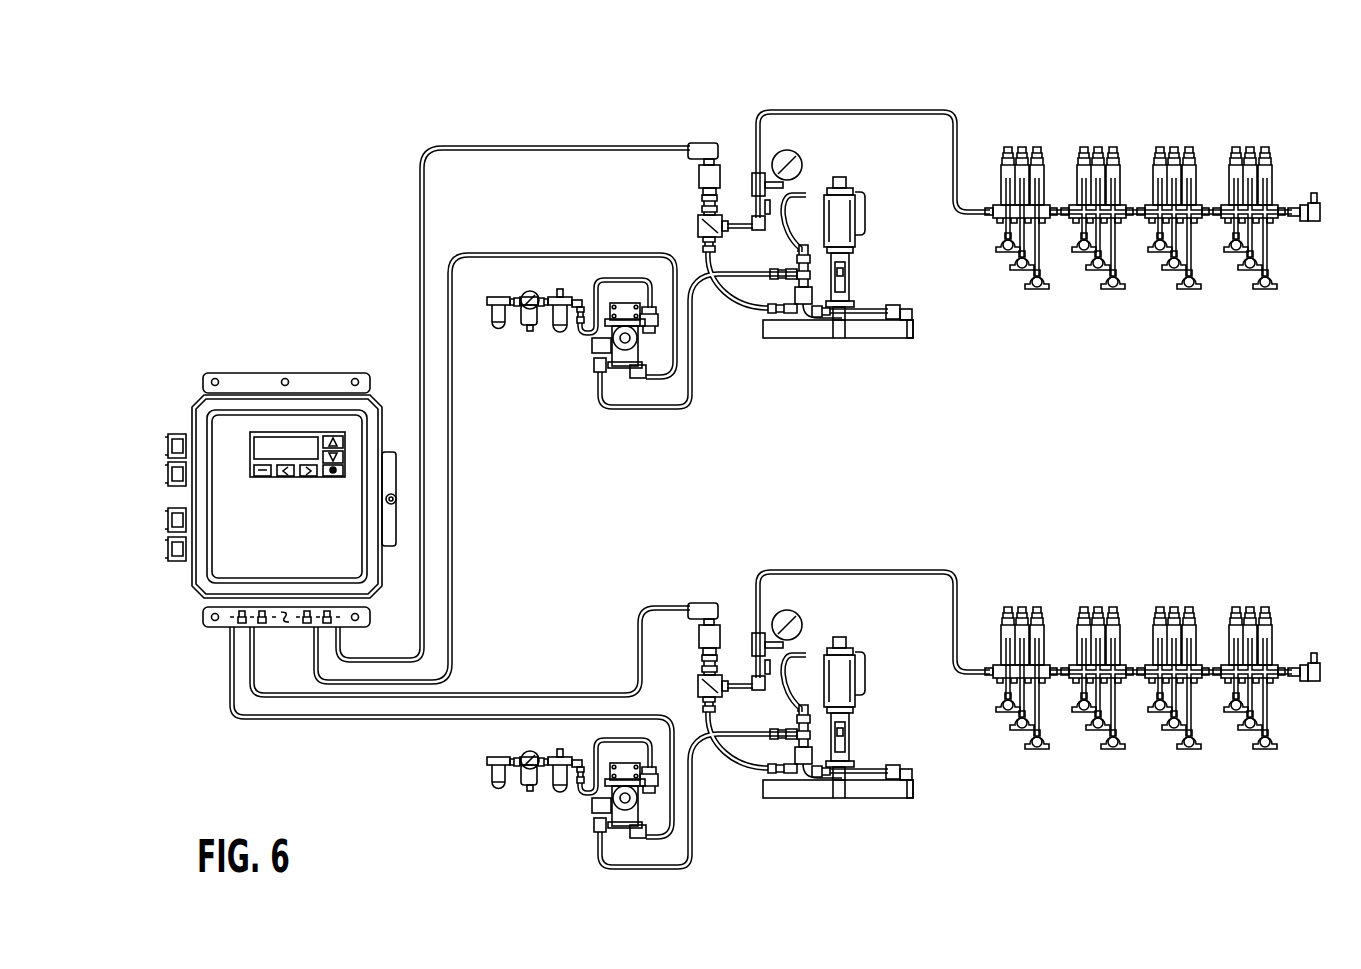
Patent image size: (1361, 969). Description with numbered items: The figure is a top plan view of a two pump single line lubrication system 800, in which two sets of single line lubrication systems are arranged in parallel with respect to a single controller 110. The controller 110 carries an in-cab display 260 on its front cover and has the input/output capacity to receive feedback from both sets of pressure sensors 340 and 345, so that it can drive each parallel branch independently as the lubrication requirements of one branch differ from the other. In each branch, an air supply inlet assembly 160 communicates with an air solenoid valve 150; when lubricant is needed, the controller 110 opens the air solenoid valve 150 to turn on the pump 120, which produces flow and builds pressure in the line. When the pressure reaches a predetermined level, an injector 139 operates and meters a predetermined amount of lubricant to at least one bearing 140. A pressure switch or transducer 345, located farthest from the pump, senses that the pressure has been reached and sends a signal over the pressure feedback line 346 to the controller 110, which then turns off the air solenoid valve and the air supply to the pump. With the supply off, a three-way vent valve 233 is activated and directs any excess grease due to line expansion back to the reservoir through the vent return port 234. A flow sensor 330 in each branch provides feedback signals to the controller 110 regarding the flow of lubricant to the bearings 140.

The two pump single line lubrication system 800 is at (283, 157).
The controller 110 is at (274, 358).
The in-cab display 260 is at (303, 421).
The pressure sensor 340 is at (706, 142).
The flow sensor 330 is at (702, 222).
The pump 120 is at (838, 220).
The 3-way vent valve 233 is at (800, 322).
The vent return port 234 is at (912, 338).
The air supply inlet assembly 160 is at (523, 357).
The air solenoid valve 150 is at (627, 350).
The injector 139 is at (967, 147).
The bearing 140 is at (967, 287).
The pressure feedback line 346 is at (1317, 195).
The pressure switch or transducer 345 is at (1312, 222).